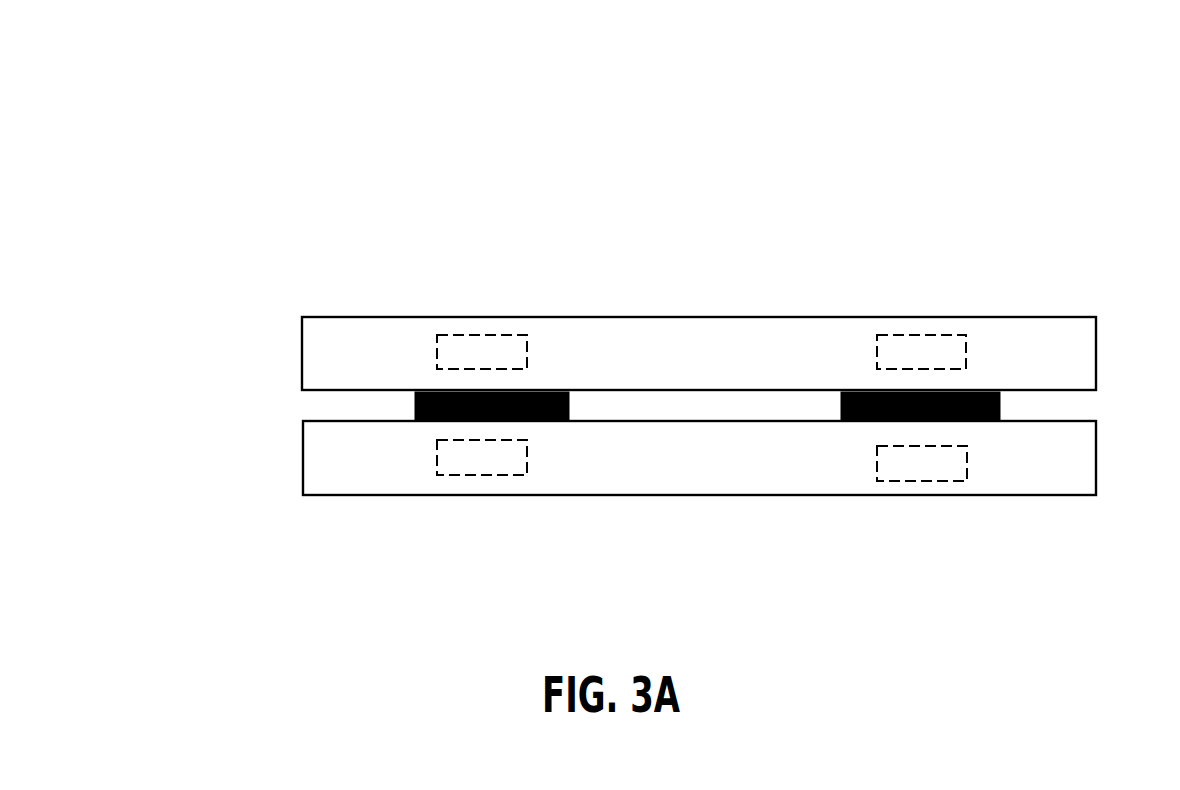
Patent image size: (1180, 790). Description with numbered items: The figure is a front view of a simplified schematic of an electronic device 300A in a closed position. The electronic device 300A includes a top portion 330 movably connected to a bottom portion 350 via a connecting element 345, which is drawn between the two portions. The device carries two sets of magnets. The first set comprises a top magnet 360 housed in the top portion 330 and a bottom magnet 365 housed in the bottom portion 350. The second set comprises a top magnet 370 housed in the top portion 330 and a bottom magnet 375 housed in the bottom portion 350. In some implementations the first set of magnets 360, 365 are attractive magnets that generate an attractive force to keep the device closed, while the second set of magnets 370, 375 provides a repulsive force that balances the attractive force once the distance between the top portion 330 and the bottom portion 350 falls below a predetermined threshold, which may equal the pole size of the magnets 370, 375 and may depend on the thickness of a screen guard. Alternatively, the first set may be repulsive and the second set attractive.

The electronic device 300A is at (248, 68).
The top portion 330 is at (347, 315).
The bottom portion 350 is at (303, 474).
The connecting element 345 is at (415, 403).
The top magnet 360 is at (482, 333).
The top magnet 370 is at (918, 333).
The bottom magnet 365 is at (455, 476).
The bottom magnet 375 is at (908, 482).